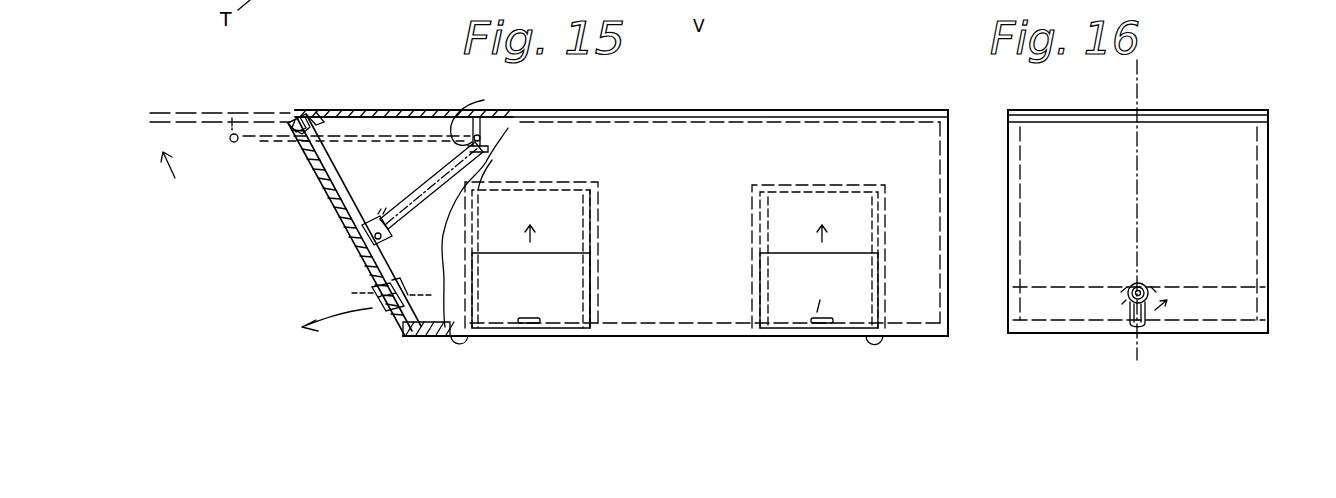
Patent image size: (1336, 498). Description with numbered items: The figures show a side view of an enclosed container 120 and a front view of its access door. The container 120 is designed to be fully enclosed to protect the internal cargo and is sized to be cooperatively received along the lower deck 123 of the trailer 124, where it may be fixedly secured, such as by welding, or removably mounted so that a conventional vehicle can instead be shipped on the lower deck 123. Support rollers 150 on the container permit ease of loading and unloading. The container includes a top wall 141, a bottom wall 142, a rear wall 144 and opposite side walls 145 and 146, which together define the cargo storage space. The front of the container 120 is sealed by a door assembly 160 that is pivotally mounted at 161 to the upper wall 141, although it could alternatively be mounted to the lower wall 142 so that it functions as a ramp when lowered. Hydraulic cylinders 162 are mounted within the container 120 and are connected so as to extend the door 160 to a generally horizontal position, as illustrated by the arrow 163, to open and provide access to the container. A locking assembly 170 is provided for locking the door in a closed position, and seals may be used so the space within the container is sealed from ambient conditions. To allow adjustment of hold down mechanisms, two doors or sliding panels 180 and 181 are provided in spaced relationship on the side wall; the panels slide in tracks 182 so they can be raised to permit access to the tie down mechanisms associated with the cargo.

In FIG. 15, the container 120 is at (710, 138).
In FIG. 15, the top wall 141 is at (776, 110).
In FIG. 15, the bottom wall 142 is at (657, 338).
In FIG. 15, the door assembly 160 is at (338, 208).
In FIG. 16, the door assembly 160 is at (1190, 148).
In FIG. 15, the pivot mounting 161 is at (313, 120).
In FIG. 15, the hydraulic cylinders 162 is at (476, 112).
In FIG. 15, the support rollers 150 is at (455, 346).
In FIG. 15, the sliding panel 180 is at (571, 313).
In FIG. 15, the sliding panel 181 is at (808, 336).
In FIG. 15, the tracks 182 is at (593, 230).
In FIG. 15, the lower deck 123 is at (849, 0).
In FIG. 15, the arrow 163 is at (400, 0).
In FIG. 15, the trailer 124 is at (448, 6).
In FIG. 16, the side wall 146 is at (1270, 194).
In FIG. 16, the side wall 145 is at (1008, 212).
In FIG. 16, the rear wall 144 is at (1008, 322).
In FIG. 16, the locking assembly 170 is at (1146, 286).